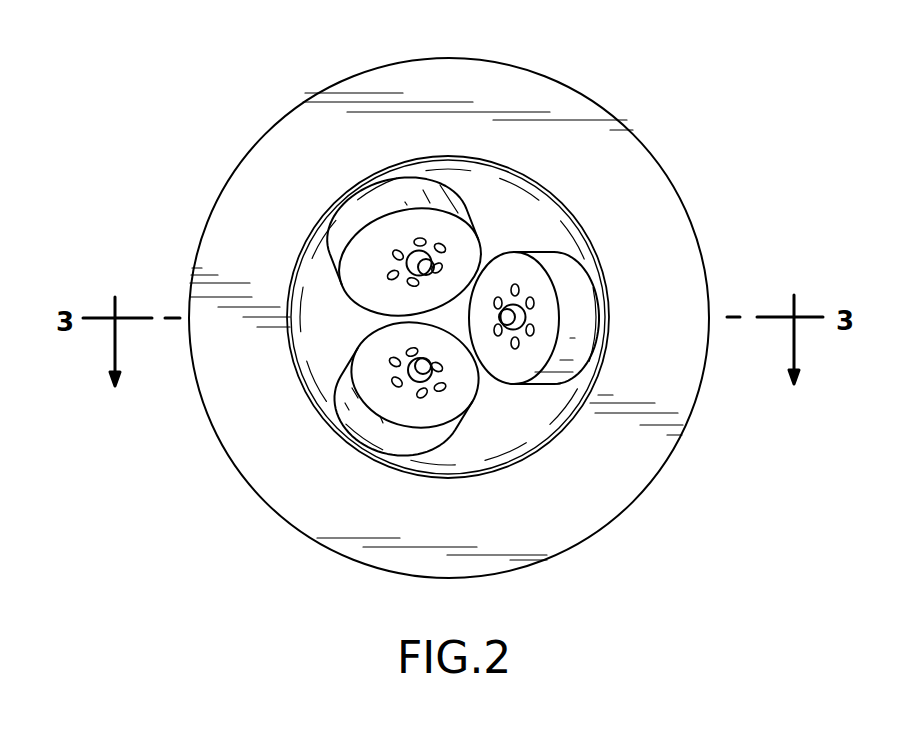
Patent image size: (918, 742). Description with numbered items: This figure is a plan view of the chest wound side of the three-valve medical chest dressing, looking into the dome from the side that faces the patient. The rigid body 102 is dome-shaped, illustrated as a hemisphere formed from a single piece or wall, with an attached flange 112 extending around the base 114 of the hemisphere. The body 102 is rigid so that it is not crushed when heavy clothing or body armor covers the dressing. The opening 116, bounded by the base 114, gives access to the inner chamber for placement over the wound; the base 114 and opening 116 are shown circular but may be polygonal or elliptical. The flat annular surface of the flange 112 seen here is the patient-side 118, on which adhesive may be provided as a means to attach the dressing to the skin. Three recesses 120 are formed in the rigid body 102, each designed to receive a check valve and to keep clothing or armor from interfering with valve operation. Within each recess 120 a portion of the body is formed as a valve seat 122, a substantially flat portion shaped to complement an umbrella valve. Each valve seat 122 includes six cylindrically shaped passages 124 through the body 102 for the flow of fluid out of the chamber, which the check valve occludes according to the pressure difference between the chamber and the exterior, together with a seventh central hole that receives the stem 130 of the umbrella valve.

The rigid body 102 is at (267, 130).
The flange 112 is at (680, 253).
The base 114 is at (580, 412).
The opening 116 is at (528, 226).
The patient-side 118 is at (326, 169).
The recess 120 is at (362, 233).
The valve seat 122 is at (462, 232).
The passage 124 is at (393, 362).
The stem 130 is at (428, 380).